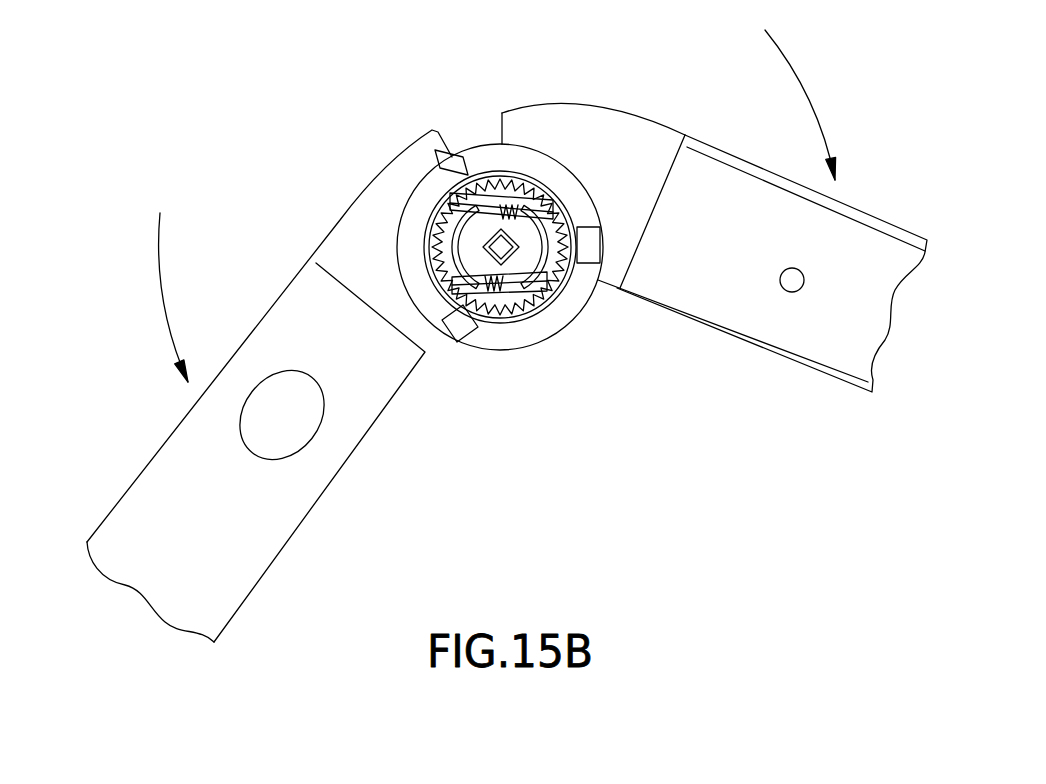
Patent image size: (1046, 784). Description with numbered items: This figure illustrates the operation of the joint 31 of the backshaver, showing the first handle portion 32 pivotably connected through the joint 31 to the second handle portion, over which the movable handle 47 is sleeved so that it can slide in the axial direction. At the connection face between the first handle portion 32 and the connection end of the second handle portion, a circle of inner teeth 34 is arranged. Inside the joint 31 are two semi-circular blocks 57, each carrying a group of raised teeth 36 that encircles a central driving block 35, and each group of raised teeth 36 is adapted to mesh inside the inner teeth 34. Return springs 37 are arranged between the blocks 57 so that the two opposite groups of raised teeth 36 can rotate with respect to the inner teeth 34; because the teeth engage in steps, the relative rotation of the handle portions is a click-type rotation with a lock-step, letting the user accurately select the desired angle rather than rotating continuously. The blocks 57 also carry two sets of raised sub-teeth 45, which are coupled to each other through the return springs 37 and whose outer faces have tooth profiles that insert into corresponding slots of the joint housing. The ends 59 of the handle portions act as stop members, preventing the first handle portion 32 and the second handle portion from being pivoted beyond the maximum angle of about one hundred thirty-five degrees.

The joint 31 is at (530, 133).
The first handle portion 32 is at (723, 183).
The movable handle 47 is at (262, 310).
The inner teeth 34 is at (477, 182).
The raised teeth 36 is at (437, 228).
The ends of the handle portions 59 is at (463, 200).
The semi-circular blocks 57 is at (467, 212).
The raised sub-teeth 45 is at (478, 268).
The return springs 37 is at (510, 205).
The driving block 35 is at (505, 258).